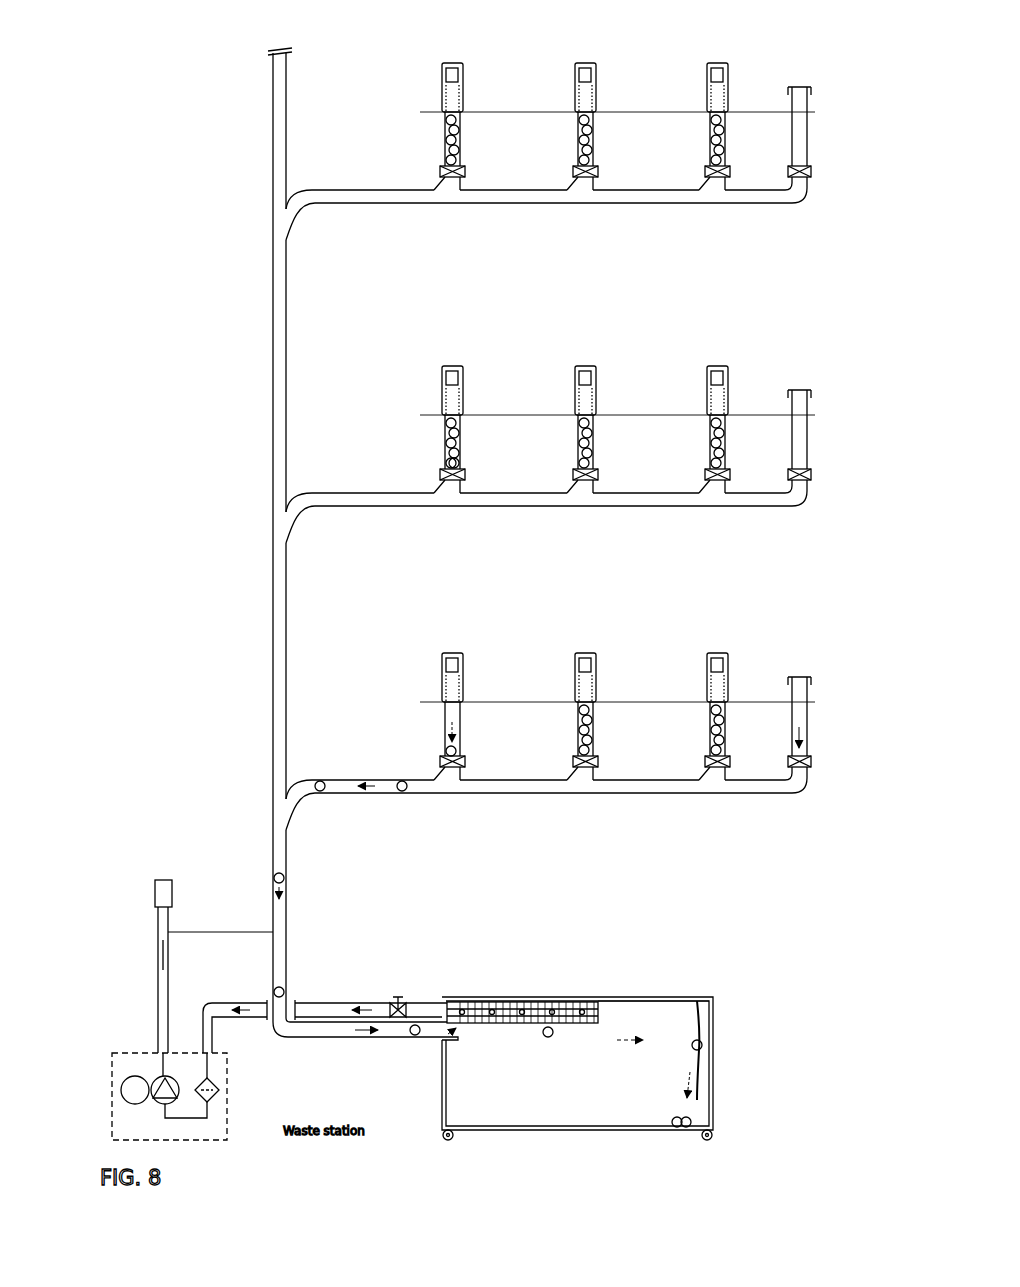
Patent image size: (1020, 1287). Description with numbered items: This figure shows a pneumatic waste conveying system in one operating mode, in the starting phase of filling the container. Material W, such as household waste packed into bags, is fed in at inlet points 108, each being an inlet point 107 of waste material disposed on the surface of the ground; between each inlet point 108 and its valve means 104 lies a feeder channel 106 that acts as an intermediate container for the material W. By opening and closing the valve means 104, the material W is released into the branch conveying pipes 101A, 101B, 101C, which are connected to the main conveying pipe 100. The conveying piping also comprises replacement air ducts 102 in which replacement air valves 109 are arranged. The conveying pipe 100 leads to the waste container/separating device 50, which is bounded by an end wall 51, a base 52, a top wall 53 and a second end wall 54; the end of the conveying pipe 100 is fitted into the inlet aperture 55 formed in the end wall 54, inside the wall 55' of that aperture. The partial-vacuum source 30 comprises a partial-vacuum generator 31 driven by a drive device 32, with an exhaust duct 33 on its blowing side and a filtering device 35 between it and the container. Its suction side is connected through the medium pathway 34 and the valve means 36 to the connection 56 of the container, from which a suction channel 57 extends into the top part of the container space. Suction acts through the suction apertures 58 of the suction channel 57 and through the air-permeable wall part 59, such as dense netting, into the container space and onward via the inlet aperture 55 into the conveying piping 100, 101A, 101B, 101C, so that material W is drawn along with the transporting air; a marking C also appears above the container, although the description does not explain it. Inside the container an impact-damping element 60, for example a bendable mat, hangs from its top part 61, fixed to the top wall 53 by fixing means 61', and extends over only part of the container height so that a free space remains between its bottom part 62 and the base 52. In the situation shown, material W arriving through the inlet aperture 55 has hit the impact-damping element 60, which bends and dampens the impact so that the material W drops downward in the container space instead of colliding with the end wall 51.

The partial-vacuum source 30 is at (150, 1003).
The partial-vacuum generator 31 is at (158, 1078).
The drive device 32 is at (118, 1085).
The exhaust duct 33 is at (163, 953).
The medium pathway 34 is at (205, 1008).
The filtering device 35 is at (216, 1097).
The valve means 36 is at (393, 1003).
The waste container/separating device 50 is at (582, 1038).
The end wall 51 is at (713, 1020).
The base 52 is at (530, 1136).
The top wall 53 is at (657, 1001).
The second end wall 54 is at (571, 1062).
The inlet aperture 55 is at (427, 1042).
The wall of the inlet aperture 55' is at (475, 1049).
The connection 56 is at (445, 1002).
The suction channel 57 is at (522, 998).
The suction aperture 58 is at (522, 998).
The wall part 59 is at (595, 1001).
The impact-damping element 60 is at (713, 1018).
The top part of the impact-damping element 61 is at (667, 1018).
The fixing means 61' is at (667, 1018).
The bottom part of the impact-damping element 62 is at (700, 1122).
The conveying pipe 100 is at (274, 733).
The branch conveying pipe 101A is at (496, 795).
The branch conveying pipe 101B is at (522, 508).
The branch conveying pipe 101C is at (522, 205).
The replacement air duct 102 is at (812, 112).
The valve means 104 is at (462, 167).
The feeder channel 106 is at (472, 126).
The inlet point of waste material 107 is at (478, 112).
The inlet point 108 is at (467, 99).
The replacement air valve 109 is at (812, 176).
The material W is at (447, 452).
The cleaning direction C is at (567, 932).